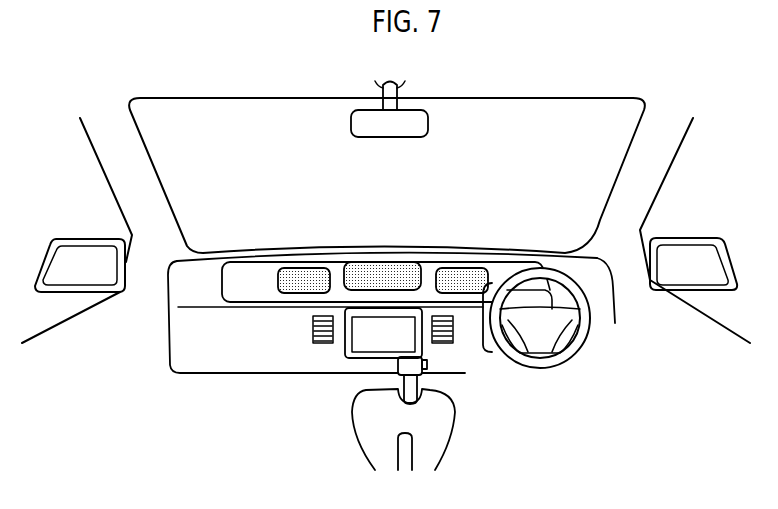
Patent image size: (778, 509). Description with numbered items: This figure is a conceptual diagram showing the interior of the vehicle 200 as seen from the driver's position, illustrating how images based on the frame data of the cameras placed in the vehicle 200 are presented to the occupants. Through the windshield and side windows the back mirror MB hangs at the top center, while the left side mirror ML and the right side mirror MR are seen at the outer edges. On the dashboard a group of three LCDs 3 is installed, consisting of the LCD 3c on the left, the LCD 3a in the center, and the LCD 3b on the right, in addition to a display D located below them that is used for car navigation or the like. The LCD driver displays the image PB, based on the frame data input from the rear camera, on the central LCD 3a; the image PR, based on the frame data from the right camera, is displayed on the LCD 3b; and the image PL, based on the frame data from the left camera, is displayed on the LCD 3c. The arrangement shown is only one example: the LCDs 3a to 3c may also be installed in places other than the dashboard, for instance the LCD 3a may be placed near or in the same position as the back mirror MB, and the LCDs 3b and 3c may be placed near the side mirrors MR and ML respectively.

The vehicle 200 is at (672, 105).
The back mirror MB is at (350, 127).
The left side mirror ML is at (80, 238).
The right side mirror MR is at (690, 238).
The LCDs 3 is at (382, 234).
The LCD 3a is at (382, 262).
The LCD 3b is at (455, 246).
The LCD 3c is at (304, 267).
The display D is at (346, 355).